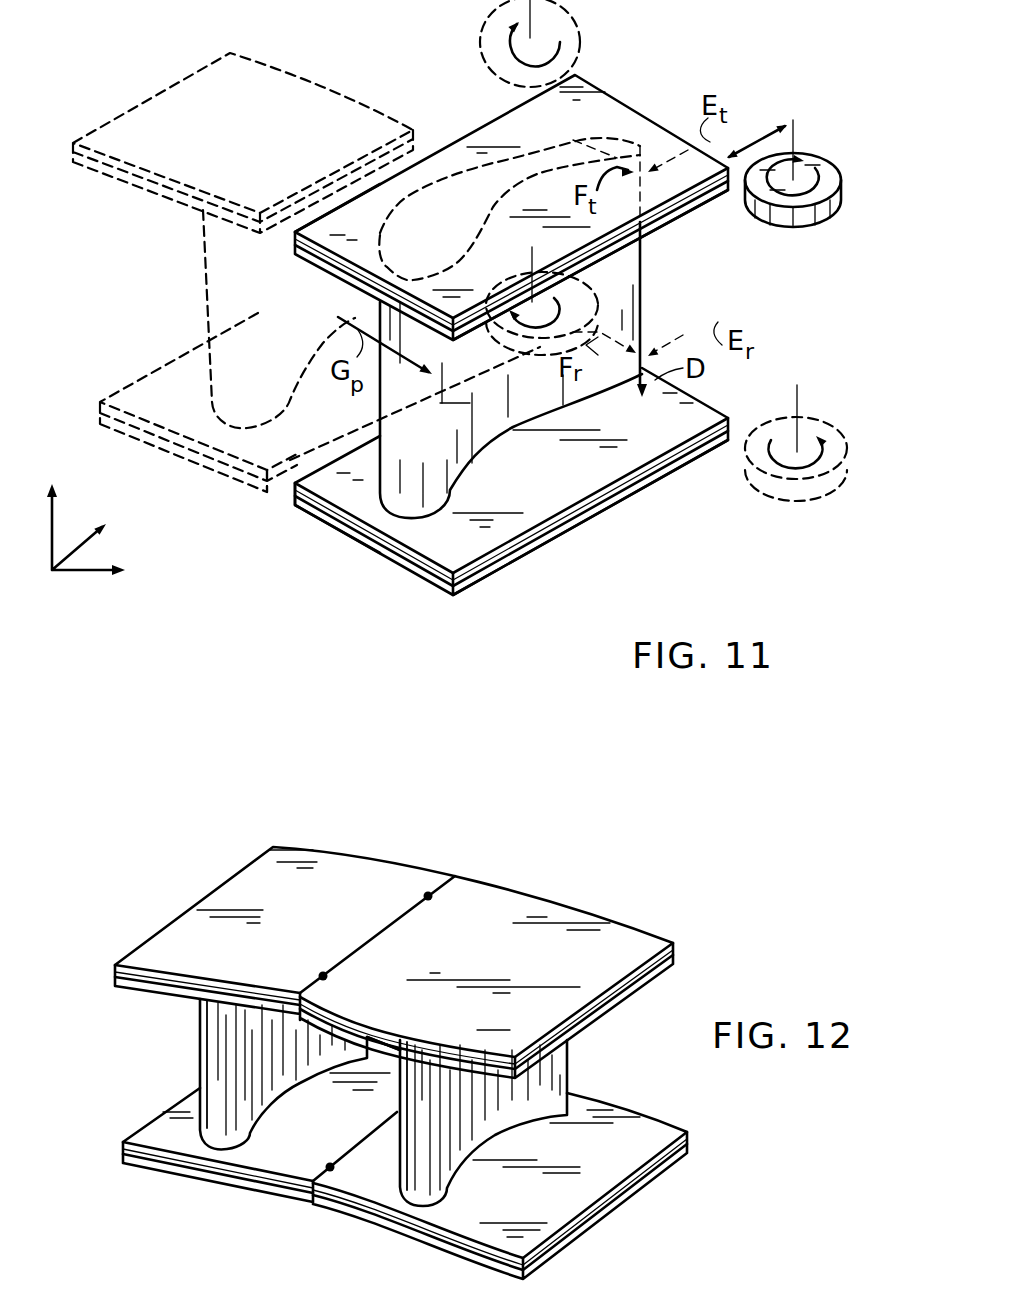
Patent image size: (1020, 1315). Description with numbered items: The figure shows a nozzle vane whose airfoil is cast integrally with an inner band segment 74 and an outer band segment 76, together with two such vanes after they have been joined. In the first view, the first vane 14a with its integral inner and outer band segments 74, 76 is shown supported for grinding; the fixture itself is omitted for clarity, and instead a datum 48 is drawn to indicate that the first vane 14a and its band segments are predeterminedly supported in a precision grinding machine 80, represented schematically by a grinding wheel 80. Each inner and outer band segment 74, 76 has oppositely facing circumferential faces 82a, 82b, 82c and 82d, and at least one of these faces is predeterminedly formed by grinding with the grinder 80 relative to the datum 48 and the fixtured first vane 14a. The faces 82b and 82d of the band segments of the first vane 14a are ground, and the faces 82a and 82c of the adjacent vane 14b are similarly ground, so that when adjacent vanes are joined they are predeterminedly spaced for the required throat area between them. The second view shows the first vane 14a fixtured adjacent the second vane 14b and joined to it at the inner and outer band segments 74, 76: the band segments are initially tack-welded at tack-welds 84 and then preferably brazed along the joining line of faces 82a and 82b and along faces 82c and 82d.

In FIG. 11, the first vane 14a is at (652, 290).
In FIG. 12, the first vane 14a is at (413, 1180).
In FIG. 11, the adjacent vane 14b is at (215, 285).
In FIG. 12, the adjacent vane 14b is at (212, 1121).
In FIG. 11, the datum 48 is at (52, 573).
In FIG. 11, the inner band segment 74 is at (653, 485).
In FIG. 12, the inner band segment 74 is at (267, 1185).
In FIG. 11, the outer band segment 76 is at (665, 126).
In FIG. 12, the outer band segment 76 is at (370, 858).
In FIG. 11, the grinding machine 80 is at (576, 20).
In FIG. 11, the circumferential face 82a is at (657, 223).
In FIG. 12, the circumferential face 82a is at (400, 915).
In FIG. 11, the circumferential face 82b is at (333, 208).
In FIG. 12, the circumferential face 82b is at (428, 933).
In FIG. 11, the circumferential face 82c is at (480, 572).
In FIG. 12, the circumferential face 82c is at (374, 1177).
In FIG. 11, the circumferential face 82d is at (300, 484).
In FIG. 12, the circumferential face 82d is at (368, 1152).
In FIG. 12, the tack-welds 84 is at (428, 896).